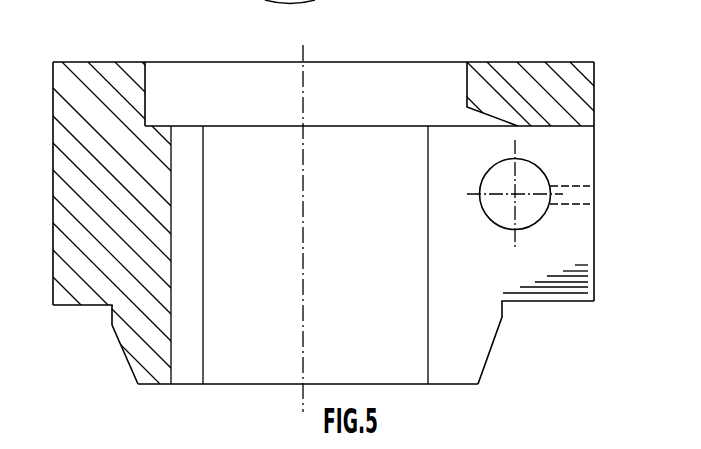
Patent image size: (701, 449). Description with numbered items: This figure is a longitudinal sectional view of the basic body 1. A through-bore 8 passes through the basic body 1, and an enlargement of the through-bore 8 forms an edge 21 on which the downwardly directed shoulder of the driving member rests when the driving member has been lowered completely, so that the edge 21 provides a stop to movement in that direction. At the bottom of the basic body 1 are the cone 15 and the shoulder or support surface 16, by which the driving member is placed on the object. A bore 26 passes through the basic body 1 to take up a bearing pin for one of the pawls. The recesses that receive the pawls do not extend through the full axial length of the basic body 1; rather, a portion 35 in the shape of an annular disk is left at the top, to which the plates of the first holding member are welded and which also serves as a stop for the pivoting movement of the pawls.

The basic body 1 is at (71, 163).
The edge 21 is at (155, 125).
The shoulder or support surface 16 is at (78, 306).
The through-bore 8 is at (171, 322).
The portion 35 is at (523, 77).
The bore 26 is at (493, 185).
The cone 15 is at (489, 317).